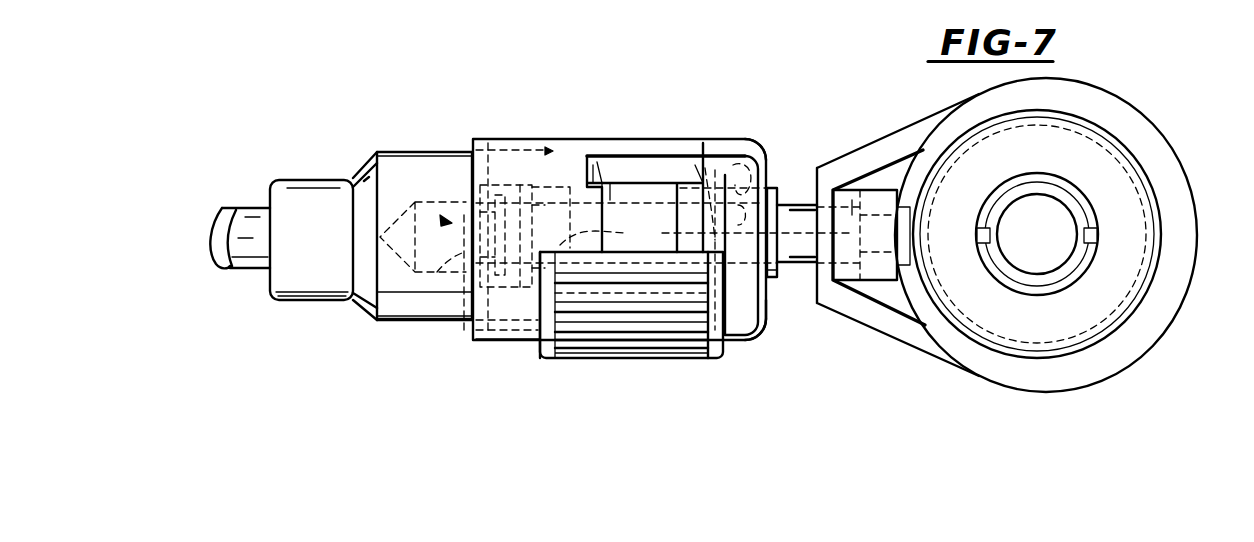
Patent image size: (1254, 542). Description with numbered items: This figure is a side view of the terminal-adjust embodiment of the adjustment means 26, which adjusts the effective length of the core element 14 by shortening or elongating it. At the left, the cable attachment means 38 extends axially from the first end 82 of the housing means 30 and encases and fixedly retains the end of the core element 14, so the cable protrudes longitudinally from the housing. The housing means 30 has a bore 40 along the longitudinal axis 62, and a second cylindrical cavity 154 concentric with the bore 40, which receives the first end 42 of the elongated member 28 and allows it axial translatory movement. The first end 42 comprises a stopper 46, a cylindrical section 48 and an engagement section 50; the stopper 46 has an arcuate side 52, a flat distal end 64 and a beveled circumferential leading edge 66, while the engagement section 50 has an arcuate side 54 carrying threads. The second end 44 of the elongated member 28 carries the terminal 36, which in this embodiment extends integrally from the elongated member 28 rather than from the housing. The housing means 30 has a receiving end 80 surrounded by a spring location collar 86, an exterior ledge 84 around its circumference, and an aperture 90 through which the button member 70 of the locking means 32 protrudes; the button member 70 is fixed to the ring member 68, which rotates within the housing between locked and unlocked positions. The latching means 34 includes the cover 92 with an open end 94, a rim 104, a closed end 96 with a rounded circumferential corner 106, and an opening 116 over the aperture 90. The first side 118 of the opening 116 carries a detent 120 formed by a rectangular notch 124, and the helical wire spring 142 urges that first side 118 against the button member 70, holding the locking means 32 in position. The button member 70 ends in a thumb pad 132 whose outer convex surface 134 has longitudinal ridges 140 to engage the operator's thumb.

The core element 14 is at (216, 218).
The adjustment means 26 is at (1180, 140).
The elongated member 28 is at (805, 275).
The housing means 30 is at (400, 325).
The locking means 32 is at (678, 359).
The latching means 34 is at (757, 342).
The terminal 36 is at (1130, 362).
The cable attachment means 38 is at (300, 178).
The bore 40 is at (396, 152).
The first end 42 is at (428, 200).
The second end 44 is at (848, 188).
The stopper 46 is at (488, 168).
The cylindrical section 48 is at (520, 188).
The engagement section 50 is at (705, 233).
The arcuate side 52 is at (641, 145).
The arcuate side 54 is at (638, 270).
The longitudinal axis 62 is at (843, 236).
The distal end 64 is at (438, 274).
The beveled circumferential leading edge 66 is at (464, 332).
The ring member 68 is at (637, 168).
The button member 70 is at (539, 359).
The receiving end 80 is at (730, 150).
The first end 82 is at (355, 172).
The exterior ledge 84 is at (551, 150).
The spring location collar 86 is at (770, 180).
The aperture 90 is at (657, 165).
The cover 92 is at (777, 318).
The open end 94 is at (462, 155).
The closed end 96 is at (778, 290).
The rim 104 is at (474, 148).
The rounded circumferential corner 106 is at (760, 137).
The opening 116 is at (695, 165).
The first side 118 is at (617, 170).
The detent 120 is at (593, 165).
The rectangular notch 124 is at (597, 162).
The thumb pad 132 is at (714, 359).
The outer convex surface 134 is at (576, 359).
The longitudinal ridges 140 is at (767, 299).
The helical wire spring 142 is at (852, 200).
The second cylindrical cavity 154 is at (518, 270).